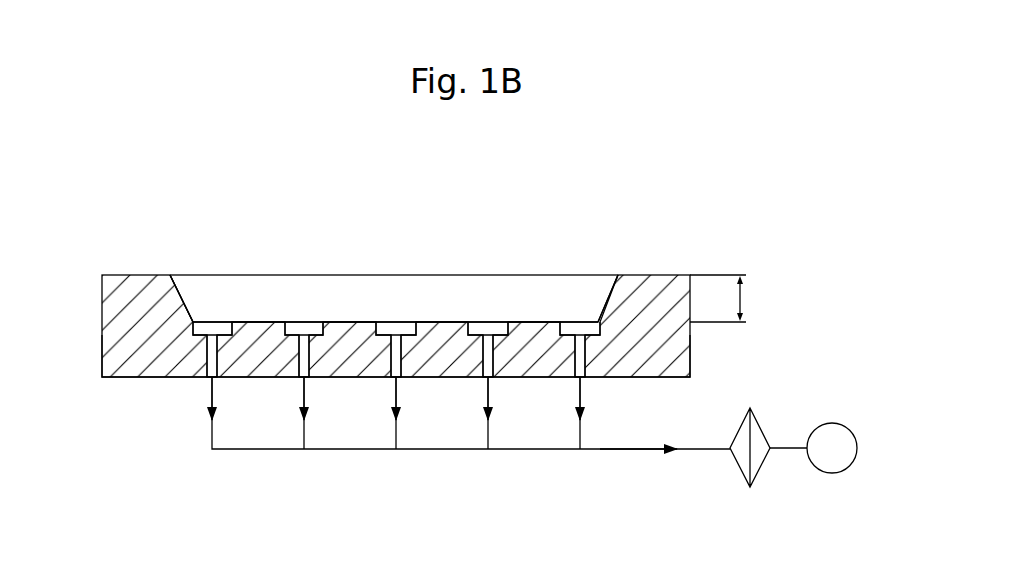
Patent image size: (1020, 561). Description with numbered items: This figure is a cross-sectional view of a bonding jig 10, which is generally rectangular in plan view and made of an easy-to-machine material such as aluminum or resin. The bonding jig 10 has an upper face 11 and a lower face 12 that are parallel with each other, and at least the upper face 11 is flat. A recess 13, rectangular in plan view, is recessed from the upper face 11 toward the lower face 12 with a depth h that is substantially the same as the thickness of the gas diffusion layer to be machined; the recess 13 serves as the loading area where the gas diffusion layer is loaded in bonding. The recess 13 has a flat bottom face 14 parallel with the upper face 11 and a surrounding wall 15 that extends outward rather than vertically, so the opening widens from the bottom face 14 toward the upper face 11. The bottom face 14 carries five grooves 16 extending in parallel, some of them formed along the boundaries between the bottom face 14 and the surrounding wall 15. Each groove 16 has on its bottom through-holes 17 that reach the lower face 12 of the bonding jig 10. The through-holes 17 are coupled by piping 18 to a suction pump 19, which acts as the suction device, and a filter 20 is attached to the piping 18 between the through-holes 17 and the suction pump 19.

The bonding jig 10 is at (676, 187).
The upper face 11 is at (140, 274).
The lower face 12 is at (140, 378).
The recess 13 is at (425, 290).
The bottom face 14 is at (262, 321).
The surrounding wall 15 is at (184, 300).
The grooves 16 is at (319, 330).
The through-holes 17 is at (304, 340).
The piping 18 is at (437, 449).
The suction pump 19 is at (818, 472).
The filter 20 is at (740, 466).